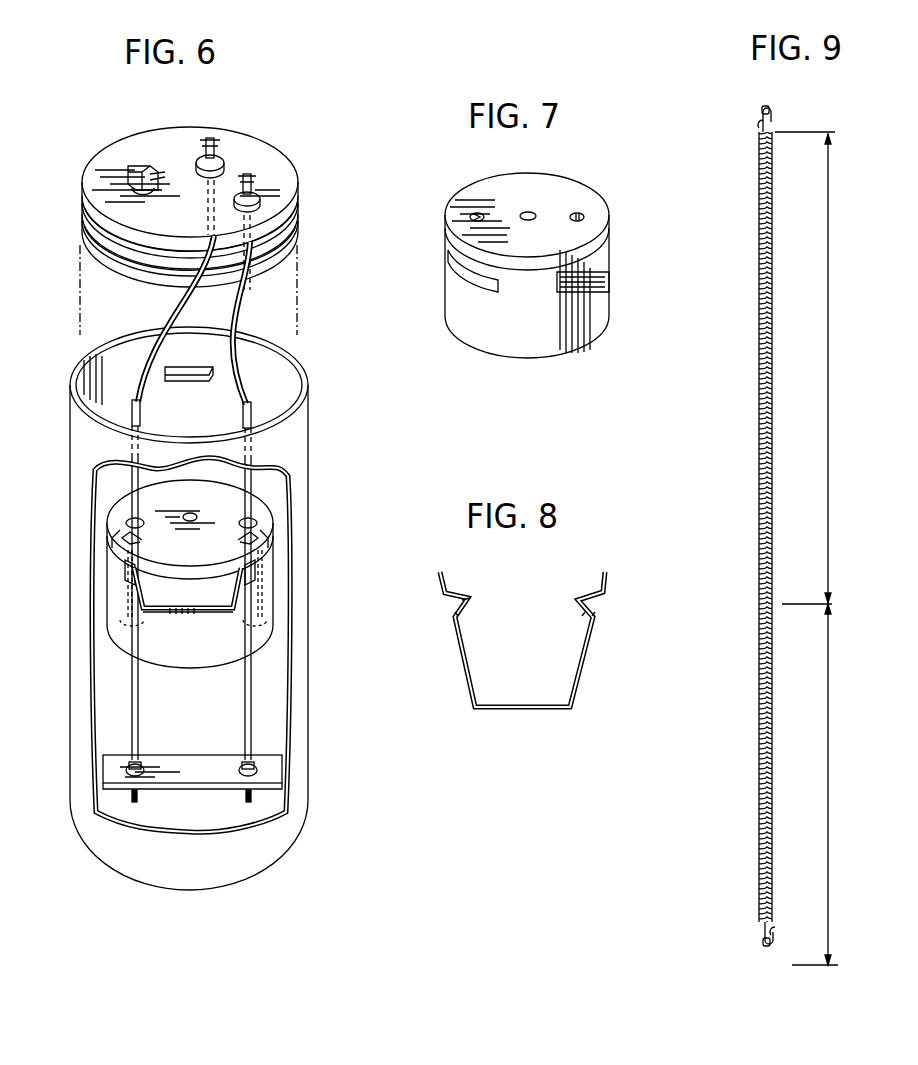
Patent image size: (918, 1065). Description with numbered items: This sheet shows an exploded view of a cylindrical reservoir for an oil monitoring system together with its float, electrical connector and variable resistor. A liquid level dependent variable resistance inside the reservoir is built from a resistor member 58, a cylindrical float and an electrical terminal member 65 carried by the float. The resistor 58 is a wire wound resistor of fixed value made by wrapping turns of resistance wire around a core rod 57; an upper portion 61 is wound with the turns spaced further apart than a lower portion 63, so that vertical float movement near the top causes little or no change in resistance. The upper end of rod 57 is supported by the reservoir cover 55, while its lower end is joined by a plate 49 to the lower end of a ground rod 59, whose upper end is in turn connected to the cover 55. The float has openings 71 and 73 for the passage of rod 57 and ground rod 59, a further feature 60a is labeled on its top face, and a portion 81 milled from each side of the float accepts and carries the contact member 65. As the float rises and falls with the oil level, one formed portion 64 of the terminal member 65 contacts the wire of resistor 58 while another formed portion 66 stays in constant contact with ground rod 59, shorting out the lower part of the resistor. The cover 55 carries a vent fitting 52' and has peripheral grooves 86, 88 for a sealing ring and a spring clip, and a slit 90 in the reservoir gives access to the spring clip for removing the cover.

In FIG. 6, the plate 49 is at (223, 784).
In FIG. 6, the vent fitting 52' is at (106, 152).
In FIG. 6, the reservoir cover 55 is at (298, 205).
In FIG. 6, the rod 57 is at (134, 400).
In FIG. 9, the rod 57 is at (775, 940).
In FIG. 6, the resistor member 58 is at (120, 414).
In FIG. 8, the resistor member 58 is at (458, 606).
In FIG. 9, the resistor member 58 is at (758, 386).
In FIG. 6, the ground rod 59 is at (255, 412).
In FIG. 8, the ground rod 59 is at (595, 606).
In FIG. 7, the hole 60a is at (530, 211).
In FIG. 9, the upper portion 61 is at (828, 370).
In FIG. 9, the lower portion 63 is at (828, 795).
In FIG. 6, the formed portion 64 is at (150, 552).
In FIG. 8, the formed portion 64 is at (462, 600).
In FIG. 6, the electrical terminal member 65 is at (210, 614).
In FIG. 8, the electrical terminal member 65 is at (520, 710).
In FIG. 6, the formed portion 66 is at (285, 520).
In FIG. 8, the formed portion 66 is at (585, 608).
In FIG. 7, the opening 71 is at (474, 214).
In FIG. 7, the opening 73 is at (585, 216).
In FIG. 7, the milled out portion 81 is at (450, 262).
In FIG. 6, the peripheral groove 86 is at (88, 216).
In FIG. 6, the peripheral groove 88 is at (84, 252).
In FIG. 6, the slit 90 is at (195, 382).